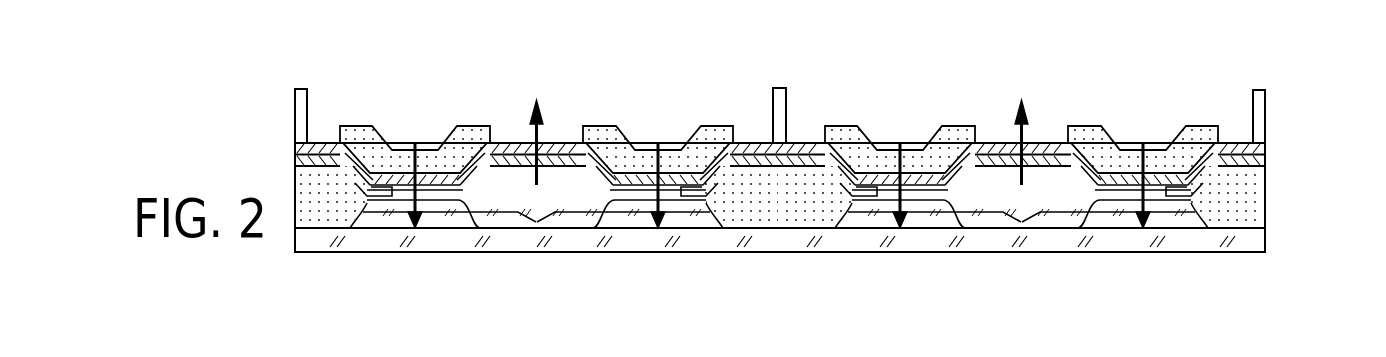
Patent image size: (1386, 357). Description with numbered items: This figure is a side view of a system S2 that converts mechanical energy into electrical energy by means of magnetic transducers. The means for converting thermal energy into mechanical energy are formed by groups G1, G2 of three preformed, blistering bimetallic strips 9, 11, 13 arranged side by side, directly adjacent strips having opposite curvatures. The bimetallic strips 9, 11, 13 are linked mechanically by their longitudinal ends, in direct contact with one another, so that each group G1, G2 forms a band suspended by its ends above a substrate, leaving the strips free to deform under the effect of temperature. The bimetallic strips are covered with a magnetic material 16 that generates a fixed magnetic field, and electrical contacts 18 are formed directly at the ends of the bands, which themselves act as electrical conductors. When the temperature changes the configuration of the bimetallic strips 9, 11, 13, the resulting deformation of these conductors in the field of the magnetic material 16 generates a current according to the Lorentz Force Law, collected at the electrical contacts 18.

The bimetallic strip 9 is at (435, 180).
The bimetallic strip 11 is at (505, 163).
The bimetallic strip 13 is at (643, 182).
The magnetic material 16 is at (424, 132).
The electrical contacts 18 is at (305, 112).
The group of bimetallic strips G1 is at (533, 223).
The group of bimetallic strips G2 is at (1020, 223).
The system S2 is at (276, 151).